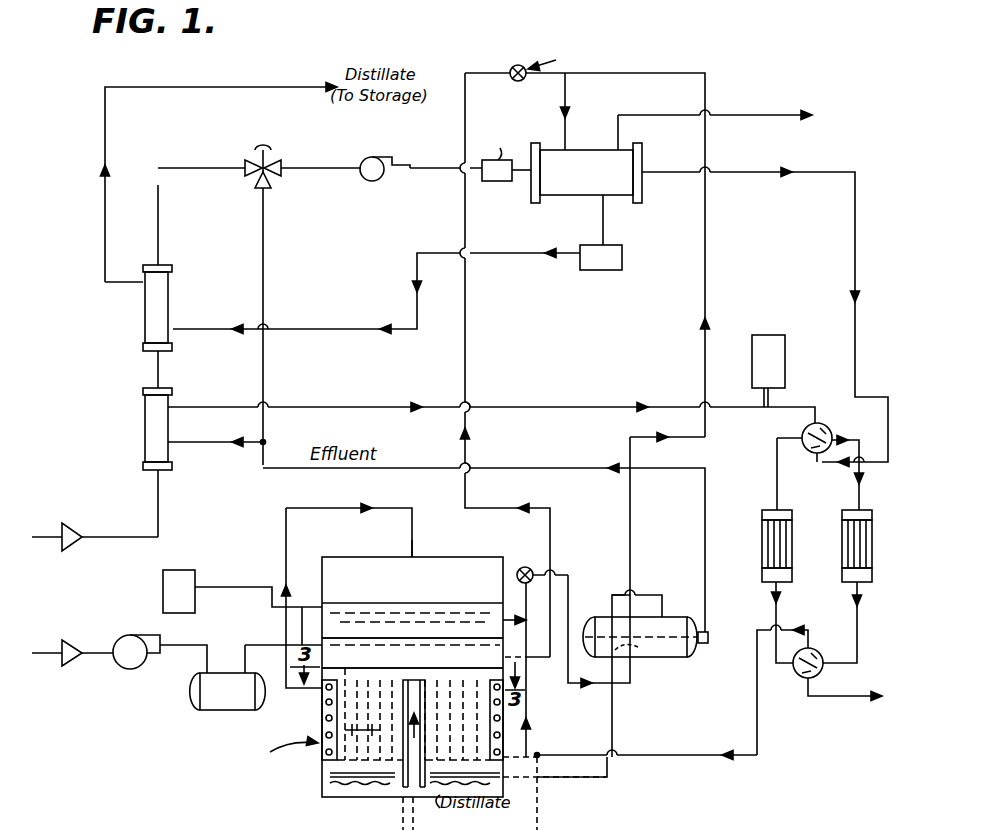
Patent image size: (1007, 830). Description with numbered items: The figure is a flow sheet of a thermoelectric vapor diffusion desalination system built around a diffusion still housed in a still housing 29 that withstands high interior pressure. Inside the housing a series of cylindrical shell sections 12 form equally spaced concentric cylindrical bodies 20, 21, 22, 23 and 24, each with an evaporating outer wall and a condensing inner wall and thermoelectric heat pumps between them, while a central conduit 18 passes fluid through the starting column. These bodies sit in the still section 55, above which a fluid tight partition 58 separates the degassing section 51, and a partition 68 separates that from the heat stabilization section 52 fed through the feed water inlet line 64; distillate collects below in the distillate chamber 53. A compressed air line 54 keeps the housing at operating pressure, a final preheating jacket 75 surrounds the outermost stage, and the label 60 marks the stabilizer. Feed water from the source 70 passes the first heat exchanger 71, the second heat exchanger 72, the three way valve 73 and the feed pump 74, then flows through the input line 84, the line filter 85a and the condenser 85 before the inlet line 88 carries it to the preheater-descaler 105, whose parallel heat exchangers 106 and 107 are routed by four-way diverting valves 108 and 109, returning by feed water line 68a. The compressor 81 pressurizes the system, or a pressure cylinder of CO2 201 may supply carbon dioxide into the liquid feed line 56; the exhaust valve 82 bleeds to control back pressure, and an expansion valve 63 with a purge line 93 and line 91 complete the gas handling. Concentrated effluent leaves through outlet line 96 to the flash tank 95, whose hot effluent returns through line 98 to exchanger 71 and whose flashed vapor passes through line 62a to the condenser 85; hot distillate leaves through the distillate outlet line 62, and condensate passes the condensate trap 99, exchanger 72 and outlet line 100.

The cylindrical shell sections 12 is at (322, 778).
The conduit 18 is at (400, 762).
The cylindrical body 20 is at (410, 664).
The cylindrical body 21 is at (400, 685).
The cylindrical body 22 is at (378, 680).
The cylindrical body 23 is at (362, 678).
The cylindrical body 24 is at (337, 704).
The still housing 29 is at (350, 790).
The degassing section 51 is at (470, 655).
The heat stabilization section 52 is at (412, 628).
The distillate chamber 53 is at (415, 772).
The compressed air line 54 is at (262, 643).
The still section 55 is at (282, 365).
The liquid feed line 56 is at (358, 407).
The fluid tight partition 58 is at (485, 638).
The heat stabilizer 60 is at (412, 677).
The distillate outlet line 62 is at (542, 658).
The line 62a is at (632, 530).
The expansion valve 63 is at (520, 65).
The feed water inlet line 64 is at (286, 543).
The partition 68 is at (368, 602).
The feed water line 68a is at (760, 750).
The feed water source 70 is at (66, 548).
The first heat exchanger 71 is at (170, 433).
The second preheating heat exchanger 72 is at (170, 305).
The three way valve 73 is at (273, 160).
The feed pump 74 is at (382, 157).
The final preheating jacket 75 is at (322, 708).
The compressor 81 is at (120, 667).
The exhaust valve 82 is at (528, 567).
The input line 84 is at (437, 162).
The condenser 85 is at (565, 195).
The line filter 85a is at (494, 181).
The inlet line 88 is at (745, 172).
The line 91 is at (570, 585).
The inert purge line 93 is at (783, 115).
The flash tank 95 is at (668, 615).
The outlet line 96 is at (598, 782).
The line 98 is at (705, 598).
The condensate trap 99 is at (622, 255).
The outlet line 100 is at (268, 87).
The preheater-descaler 105 is at (795, 480).
The heat exchanger 106 is at (762, 518).
The heat exchanger 107 is at (872, 518).
The four-way diverting valve 108 is at (828, 432).
The four-way diverting valve 109 is at (800, 674).
The pressure cylinder of CO2 201 is at (786, 362).